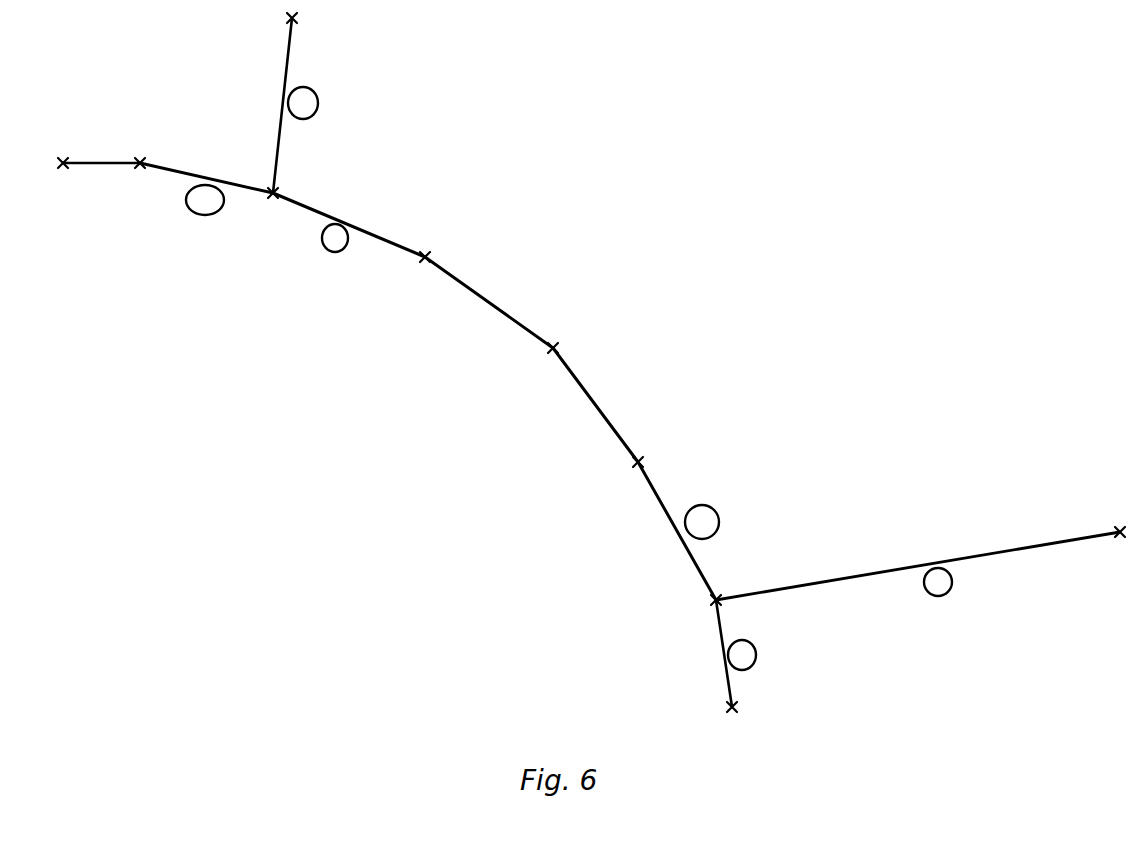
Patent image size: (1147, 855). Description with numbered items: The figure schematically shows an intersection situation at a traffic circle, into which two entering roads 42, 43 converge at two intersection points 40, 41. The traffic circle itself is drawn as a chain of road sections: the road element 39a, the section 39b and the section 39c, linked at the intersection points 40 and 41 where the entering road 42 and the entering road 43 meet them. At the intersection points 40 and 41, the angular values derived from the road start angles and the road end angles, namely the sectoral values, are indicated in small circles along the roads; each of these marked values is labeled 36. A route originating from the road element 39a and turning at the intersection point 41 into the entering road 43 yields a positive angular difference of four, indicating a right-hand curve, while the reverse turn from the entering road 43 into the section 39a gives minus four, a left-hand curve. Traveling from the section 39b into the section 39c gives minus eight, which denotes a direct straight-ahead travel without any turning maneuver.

The sensor nodes 36 is at (318, 104).
The road element of the traffic circle 39a is at (727, 661).
The section of the traffic circle 39b is at (515, 321).
The section of the traffic circle 39c is at (113, 167).
The intersection point 40 is at (279, 190).
The intersection point 41 is at (720, 594).
The entering road 42 is at (287, 63).
The entering road 43 is at (910, 562).